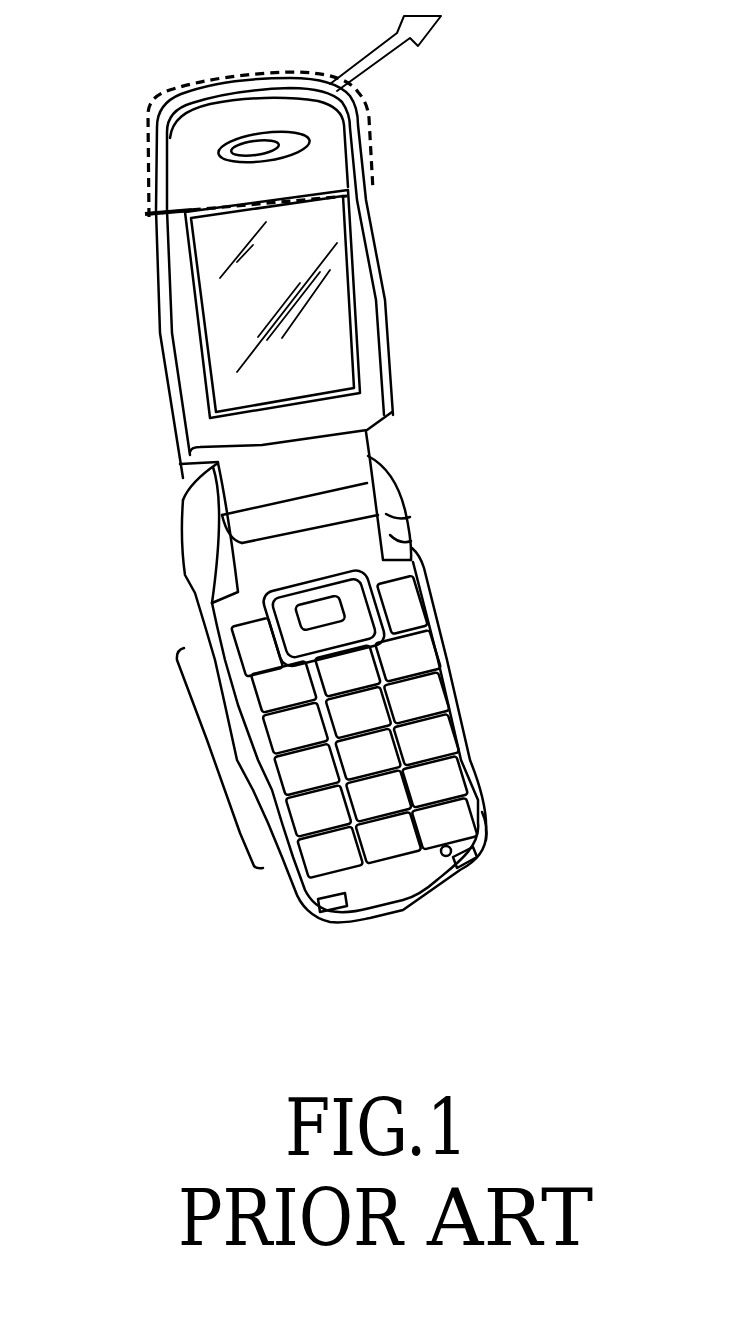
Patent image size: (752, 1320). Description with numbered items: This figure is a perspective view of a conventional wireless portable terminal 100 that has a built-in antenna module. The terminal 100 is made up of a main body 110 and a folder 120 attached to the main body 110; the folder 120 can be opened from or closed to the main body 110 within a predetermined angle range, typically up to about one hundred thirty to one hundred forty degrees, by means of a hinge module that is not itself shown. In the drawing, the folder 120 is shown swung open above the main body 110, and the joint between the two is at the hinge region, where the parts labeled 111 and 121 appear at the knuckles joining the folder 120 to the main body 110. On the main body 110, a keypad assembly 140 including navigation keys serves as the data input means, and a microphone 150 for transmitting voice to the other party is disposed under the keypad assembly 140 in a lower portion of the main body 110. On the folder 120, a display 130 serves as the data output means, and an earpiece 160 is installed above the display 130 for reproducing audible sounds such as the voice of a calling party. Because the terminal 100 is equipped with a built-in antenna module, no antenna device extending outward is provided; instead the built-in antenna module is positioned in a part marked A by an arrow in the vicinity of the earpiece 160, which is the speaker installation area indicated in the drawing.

The terminal 100 is at (307, 487).
The main body 110 is at (322, 703).
The side hinge arms 111 is at (222, 530).
The folder 120 is at (259, 275).
The center hinge arm 121 is at (340, 508).
The display 130 is at (328, 343).
The keypad assembly 140 is at (200, 743).
The microphone 150 is at (485, 825).
The earpiece 160 is at (310, 143).